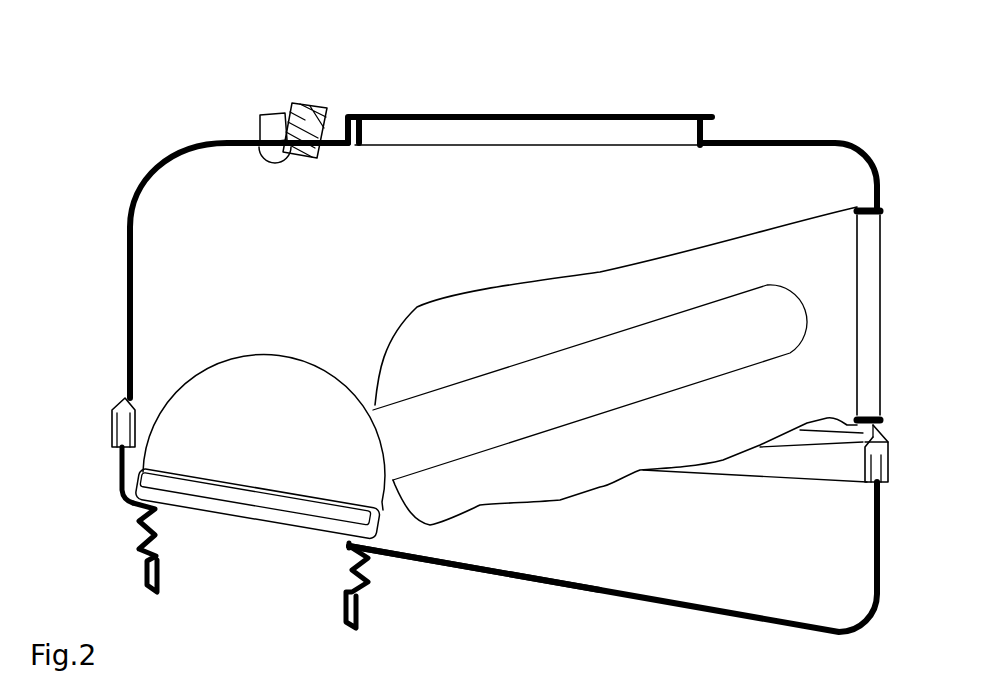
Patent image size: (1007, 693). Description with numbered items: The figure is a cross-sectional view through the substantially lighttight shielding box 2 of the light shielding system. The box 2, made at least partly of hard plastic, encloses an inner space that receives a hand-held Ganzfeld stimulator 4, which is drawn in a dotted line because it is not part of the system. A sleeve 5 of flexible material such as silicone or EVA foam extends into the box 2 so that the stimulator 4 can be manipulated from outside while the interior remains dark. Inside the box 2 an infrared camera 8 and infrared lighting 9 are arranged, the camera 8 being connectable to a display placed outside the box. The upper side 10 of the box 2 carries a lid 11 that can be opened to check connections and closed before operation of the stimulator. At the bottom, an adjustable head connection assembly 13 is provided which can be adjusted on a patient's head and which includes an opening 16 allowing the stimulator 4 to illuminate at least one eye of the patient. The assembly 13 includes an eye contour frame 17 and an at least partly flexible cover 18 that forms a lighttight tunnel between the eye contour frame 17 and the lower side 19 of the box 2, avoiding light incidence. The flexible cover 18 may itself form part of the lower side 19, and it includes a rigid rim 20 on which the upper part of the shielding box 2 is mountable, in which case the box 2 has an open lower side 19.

The shielding box 2 is at (120, 104).
The Ganzfeld stimulator 4 is at (178, 387).
The sleeve 5 is at (602, 270).
The infrared camera 8 is at (309, 106).
The infrared lighting 9 is at (278, 116).
The upper side 10 is at (813, 140).
The lid 11 is at (504, 115).
The adjustable head connection assembly 13 is at (120, 583).
The opening 16 is at (245, 567).
The eye contour frame 17 is at (152, 570).
The flexible cover 18 is at (367, 570).
The lower side 19 is at (555, 588).
The rigid rim 20 is at (118, 466).